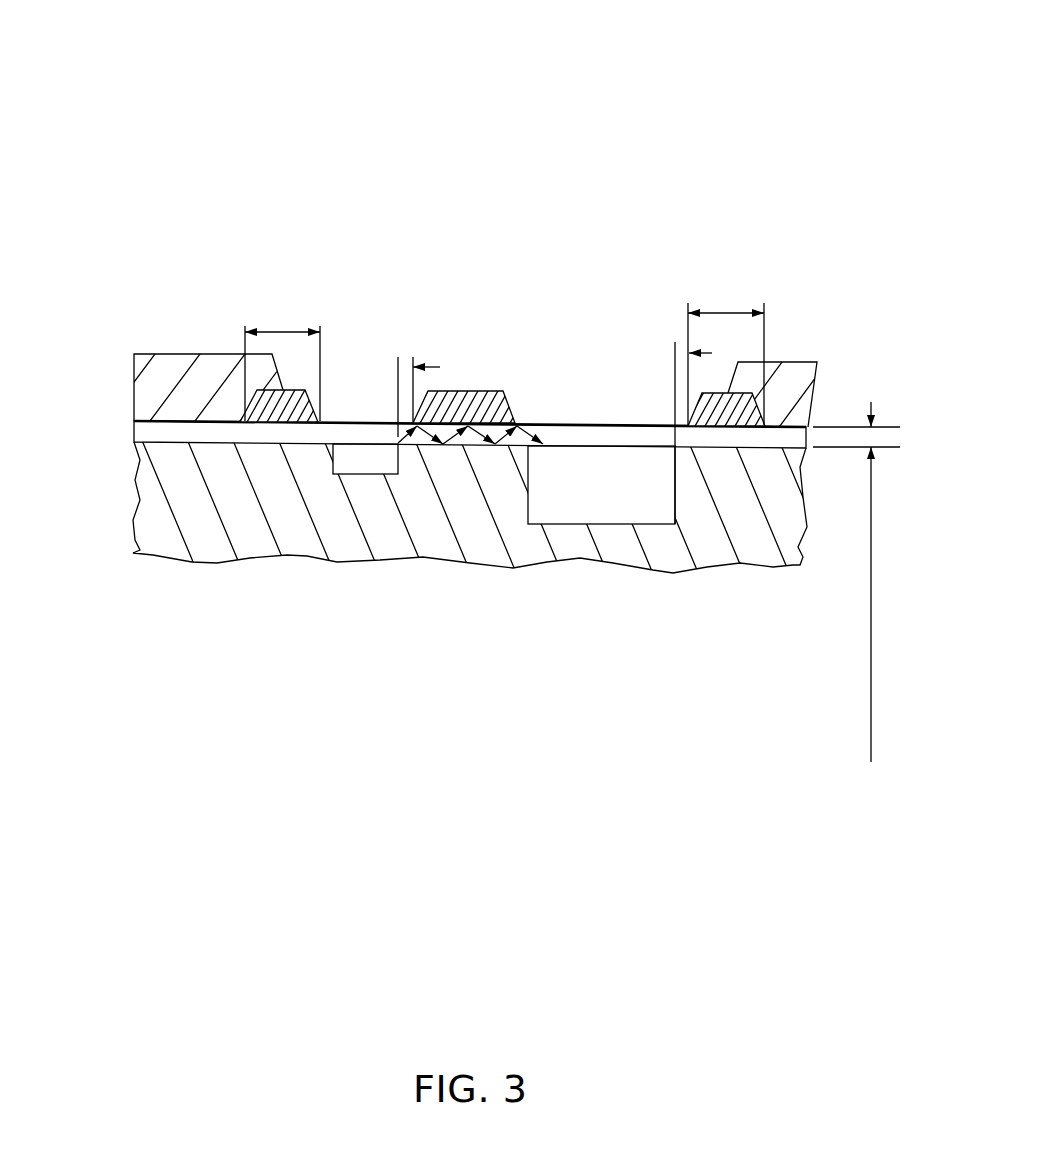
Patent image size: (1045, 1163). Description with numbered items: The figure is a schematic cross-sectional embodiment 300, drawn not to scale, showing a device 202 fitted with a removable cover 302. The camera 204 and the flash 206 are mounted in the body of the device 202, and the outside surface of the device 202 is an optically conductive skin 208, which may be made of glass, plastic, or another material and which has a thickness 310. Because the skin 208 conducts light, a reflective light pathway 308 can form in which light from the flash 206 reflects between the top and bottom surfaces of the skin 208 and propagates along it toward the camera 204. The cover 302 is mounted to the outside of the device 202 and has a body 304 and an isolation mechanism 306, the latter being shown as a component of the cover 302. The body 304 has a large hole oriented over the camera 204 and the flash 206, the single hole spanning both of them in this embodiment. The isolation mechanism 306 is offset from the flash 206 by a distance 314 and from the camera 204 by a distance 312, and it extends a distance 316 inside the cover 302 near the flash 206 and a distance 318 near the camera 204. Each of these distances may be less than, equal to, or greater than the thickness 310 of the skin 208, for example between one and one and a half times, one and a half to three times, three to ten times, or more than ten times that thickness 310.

The device 202 is at (313, 522).
The camera 204 is at (580, 493).
The flash 206 is at (350, 457).
The optically conductive skin 208 is at (797, 440).
The cross-sectional embodiment 300 is at (357, 770).
The cover 302 is at (507, 319).
The body 304 is at (830, 322).
The isolation mechanism 306 is at (320, 402).
The reflective light pathway 308 is at (531, 423).
The thickness 310 is at (871, 762).
The distance 312 is at (398, 367).
The distance 314 is at (675, 353).
The distance 316 is at (281, 332).
The distance 318 is at (728, 312).